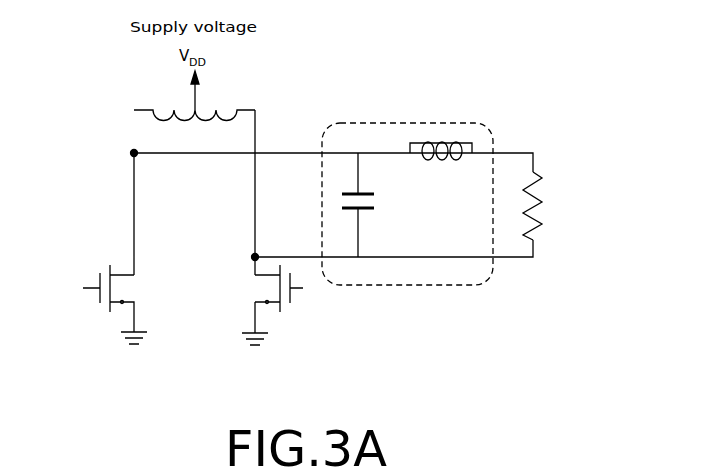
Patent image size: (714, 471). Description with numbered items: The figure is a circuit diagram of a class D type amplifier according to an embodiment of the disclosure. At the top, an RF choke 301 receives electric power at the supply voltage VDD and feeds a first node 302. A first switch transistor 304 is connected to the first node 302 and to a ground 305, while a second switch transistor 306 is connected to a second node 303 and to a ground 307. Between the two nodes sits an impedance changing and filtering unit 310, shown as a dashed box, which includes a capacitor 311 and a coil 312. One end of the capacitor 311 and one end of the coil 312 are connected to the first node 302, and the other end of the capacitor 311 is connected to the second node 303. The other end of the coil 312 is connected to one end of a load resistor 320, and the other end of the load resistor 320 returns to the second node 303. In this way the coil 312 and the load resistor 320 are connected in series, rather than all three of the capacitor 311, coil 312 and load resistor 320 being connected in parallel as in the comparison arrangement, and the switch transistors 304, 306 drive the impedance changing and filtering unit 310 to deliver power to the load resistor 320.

The RF choke 301 is at (220, 110).
The first node 302 is at (130, 153).
The second node 303 is at (251, 257).
The first switch transistor 304 is at (96, 300).
The ground 305 is at (142, 340).
The second switch transistor 306 is at (293, 305).
The ground 307 is at (262, 340).
The impedance changing and filtering unit 310 is at (405, 123).
The capacitor 311 is at (370, 209).
The coil 312 is at (443, 162).
The load resistor 320 is at (543, 222).